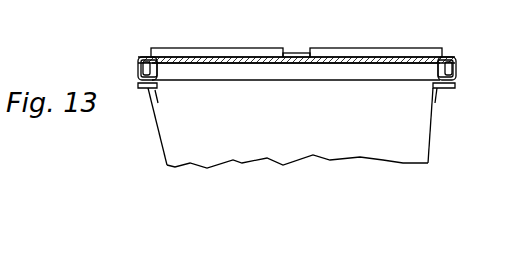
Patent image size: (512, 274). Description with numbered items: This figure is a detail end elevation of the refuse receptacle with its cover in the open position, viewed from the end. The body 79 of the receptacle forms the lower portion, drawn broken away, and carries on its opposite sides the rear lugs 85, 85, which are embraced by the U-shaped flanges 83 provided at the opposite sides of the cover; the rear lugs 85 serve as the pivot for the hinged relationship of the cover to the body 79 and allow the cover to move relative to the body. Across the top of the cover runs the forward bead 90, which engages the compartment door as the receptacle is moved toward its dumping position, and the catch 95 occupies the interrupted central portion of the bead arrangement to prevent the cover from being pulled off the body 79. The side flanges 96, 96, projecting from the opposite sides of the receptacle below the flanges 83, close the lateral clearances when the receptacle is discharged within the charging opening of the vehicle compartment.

The body of the refuse receptacle 79 is at (292, 128).
The U-shaped flange 83 is at (140, 68).
The rear lug 85 is at (150, 68).
The forward bead 90 is at (218, 50).
The catch 95 is at (293, 55).
The side flange 96 is at (147, 88).